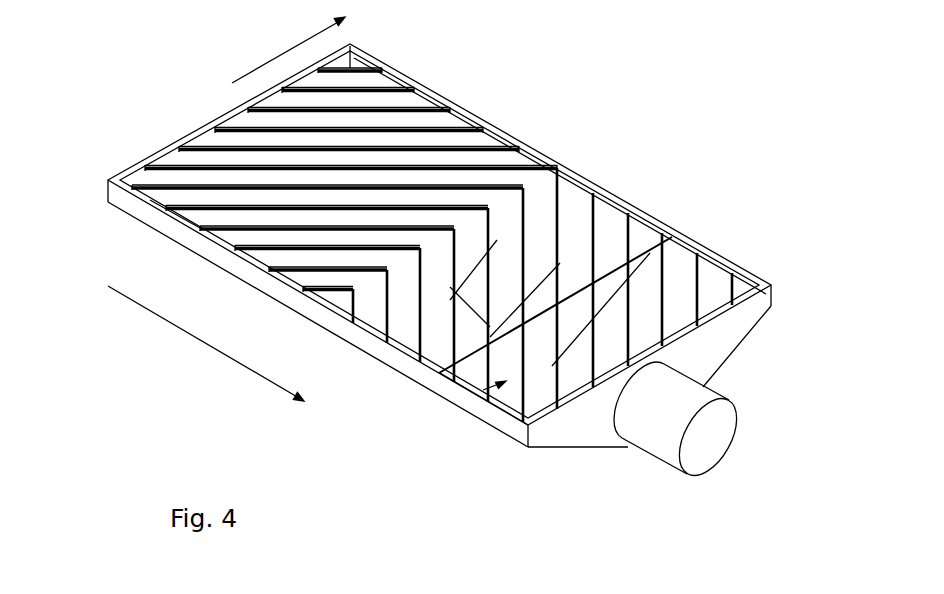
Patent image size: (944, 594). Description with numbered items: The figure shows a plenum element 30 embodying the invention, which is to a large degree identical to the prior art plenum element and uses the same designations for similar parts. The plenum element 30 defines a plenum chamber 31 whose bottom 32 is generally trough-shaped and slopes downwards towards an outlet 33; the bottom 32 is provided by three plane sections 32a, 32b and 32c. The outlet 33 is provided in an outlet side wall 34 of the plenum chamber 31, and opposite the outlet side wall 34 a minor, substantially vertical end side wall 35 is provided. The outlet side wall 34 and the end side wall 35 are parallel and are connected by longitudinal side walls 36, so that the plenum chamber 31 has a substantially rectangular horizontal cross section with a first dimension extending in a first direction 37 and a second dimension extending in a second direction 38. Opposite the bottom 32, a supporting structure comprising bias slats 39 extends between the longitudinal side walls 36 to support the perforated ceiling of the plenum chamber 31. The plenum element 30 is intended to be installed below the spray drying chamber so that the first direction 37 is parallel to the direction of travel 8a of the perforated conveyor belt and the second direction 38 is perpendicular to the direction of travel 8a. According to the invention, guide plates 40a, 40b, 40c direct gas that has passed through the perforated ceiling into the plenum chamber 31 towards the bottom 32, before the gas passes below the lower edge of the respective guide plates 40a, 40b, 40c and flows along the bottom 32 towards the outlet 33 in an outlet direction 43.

The plenum element 30 is at (463, 84).
The plenum chamber 31 is at (470, 404).
The bottom 32 is at (674, 348).
The plane section 32a is at (140, 222).
The plane section 32b is at (423, 371).
The plane section 32c is at (640, 310).
The outlet 33 is at (652, 410).
The outlet side wall 34 is at (586, 440).
The end side wall 35 is at (207, 137).
The longitudinal side walls 36 is at (655, 213).
The first direction 37 is at (293, 48).
The direction of travel 8a is at (273, 50).
The second direction 38 is at (190, 343).
The outlet direction 43 is at (210, 345).
The bias slats 39 is at (438, 133).
The guide plate 40a is at (222, 257).
The guide plate 40b is at (540, 190).
The guide plate 40c is at (640, 263).